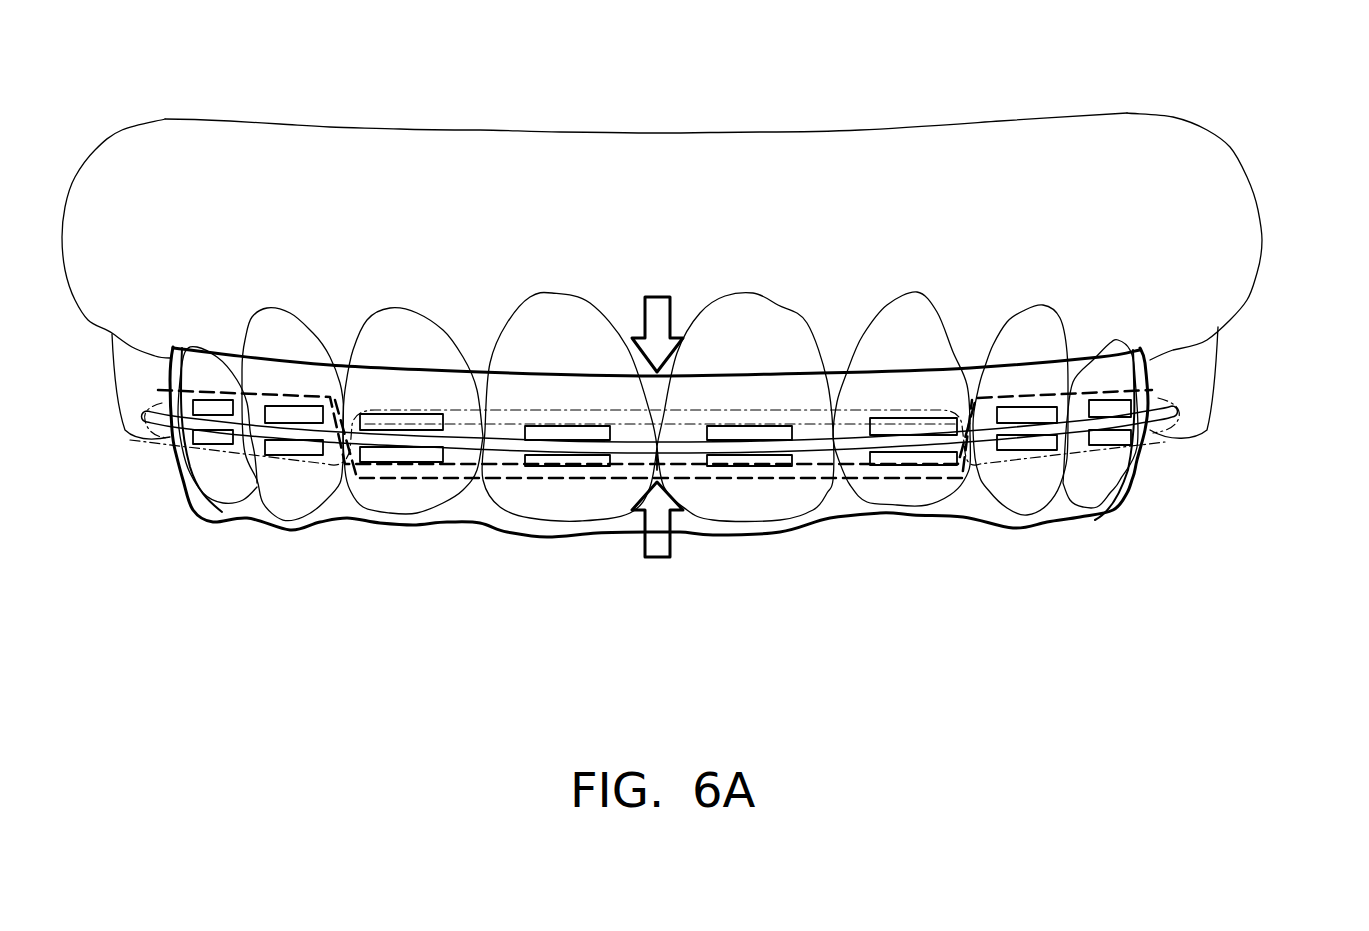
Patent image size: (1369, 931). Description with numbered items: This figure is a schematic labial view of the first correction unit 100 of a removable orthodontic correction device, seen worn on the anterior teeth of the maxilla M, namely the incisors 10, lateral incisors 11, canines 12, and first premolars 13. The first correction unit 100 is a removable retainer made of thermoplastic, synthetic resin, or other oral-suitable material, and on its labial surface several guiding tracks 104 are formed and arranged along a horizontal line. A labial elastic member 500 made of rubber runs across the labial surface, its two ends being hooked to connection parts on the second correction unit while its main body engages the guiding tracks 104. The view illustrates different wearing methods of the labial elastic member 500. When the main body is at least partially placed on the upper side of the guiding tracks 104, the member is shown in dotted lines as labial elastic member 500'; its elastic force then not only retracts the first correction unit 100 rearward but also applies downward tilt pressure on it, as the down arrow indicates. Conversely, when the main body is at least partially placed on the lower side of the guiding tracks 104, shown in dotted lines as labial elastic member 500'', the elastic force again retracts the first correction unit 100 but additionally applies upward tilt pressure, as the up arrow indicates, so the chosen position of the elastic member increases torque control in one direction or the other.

The maxilla M is at (656, 176).
The incisors 10 is at (598, 497).
The lateral incisors 11 is at (402, 492).
The canines 12 is at (298, 492).
The first premolars 13 is at (225, 480).
The first correction unit 100 is at (1140, 480).
The guiding tracks 104 is at (572, 433).
The labial elastic member 500 is at (660, 535).
The labial elastic member (upper-side state) 500' is at (749, 412).
The labial elastic member (lower-side state) 500'' is at (654, 531).